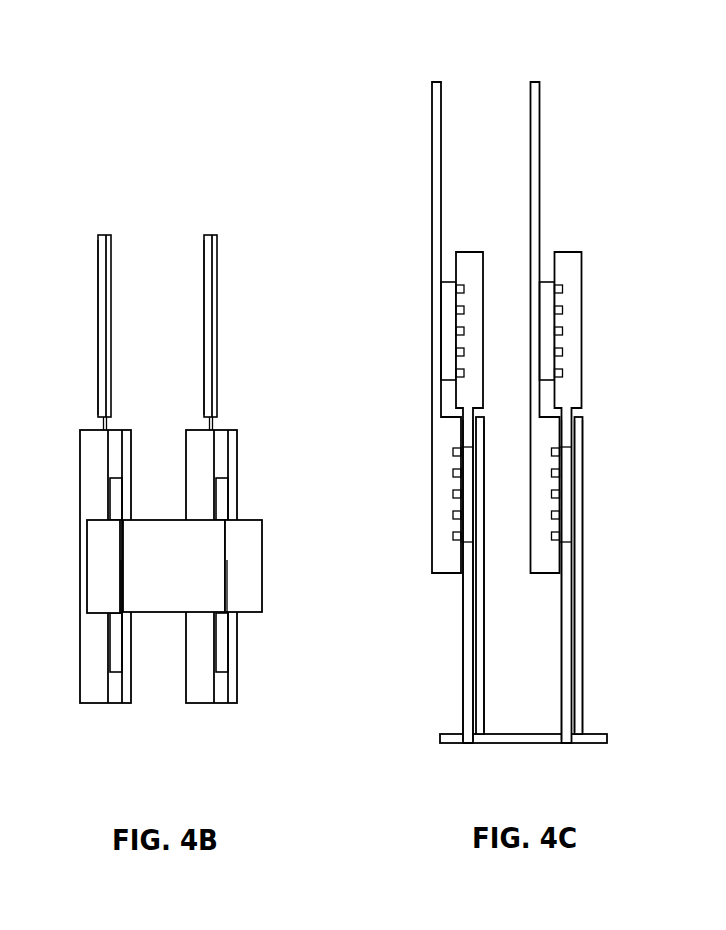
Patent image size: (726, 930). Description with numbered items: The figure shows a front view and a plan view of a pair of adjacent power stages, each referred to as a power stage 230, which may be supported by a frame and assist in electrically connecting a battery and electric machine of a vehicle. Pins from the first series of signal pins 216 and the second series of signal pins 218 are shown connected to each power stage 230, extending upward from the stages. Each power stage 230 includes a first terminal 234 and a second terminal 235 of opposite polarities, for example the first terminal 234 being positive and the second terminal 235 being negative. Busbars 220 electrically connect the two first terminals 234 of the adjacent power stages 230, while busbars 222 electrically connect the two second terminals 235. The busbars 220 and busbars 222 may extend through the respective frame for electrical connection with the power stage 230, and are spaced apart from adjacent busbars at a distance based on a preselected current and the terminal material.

In FIG. 4B, the first series of signal pins 216 is at (111, 236).
In FIG. 4B, the second series of signal pins 218 is at (98, 287).
In FIG. 4B, the busbars 220 is at (172, 520).
In FIG. 4C, the busbars 220 is at (523, 744).
In FIG. 4B, the busbars 222 is at (95, 547).
In FIG. 4C, the busbars 222 is at (463, 688).
In FIG. 4B, the power stage 230 is at (103, 195).
In FIG. 4C, the power stage 230 is at (434, 67).
In FIG. 4B, the first terminal 234 is at (132, 440).
In FIG. 4C, the first terminal 234 is at (482, 607).
In FIG. 4B, the second terminal 235 is at (237, 440).
In FIG. 4C, the second terminal 235 is at (468, 551).